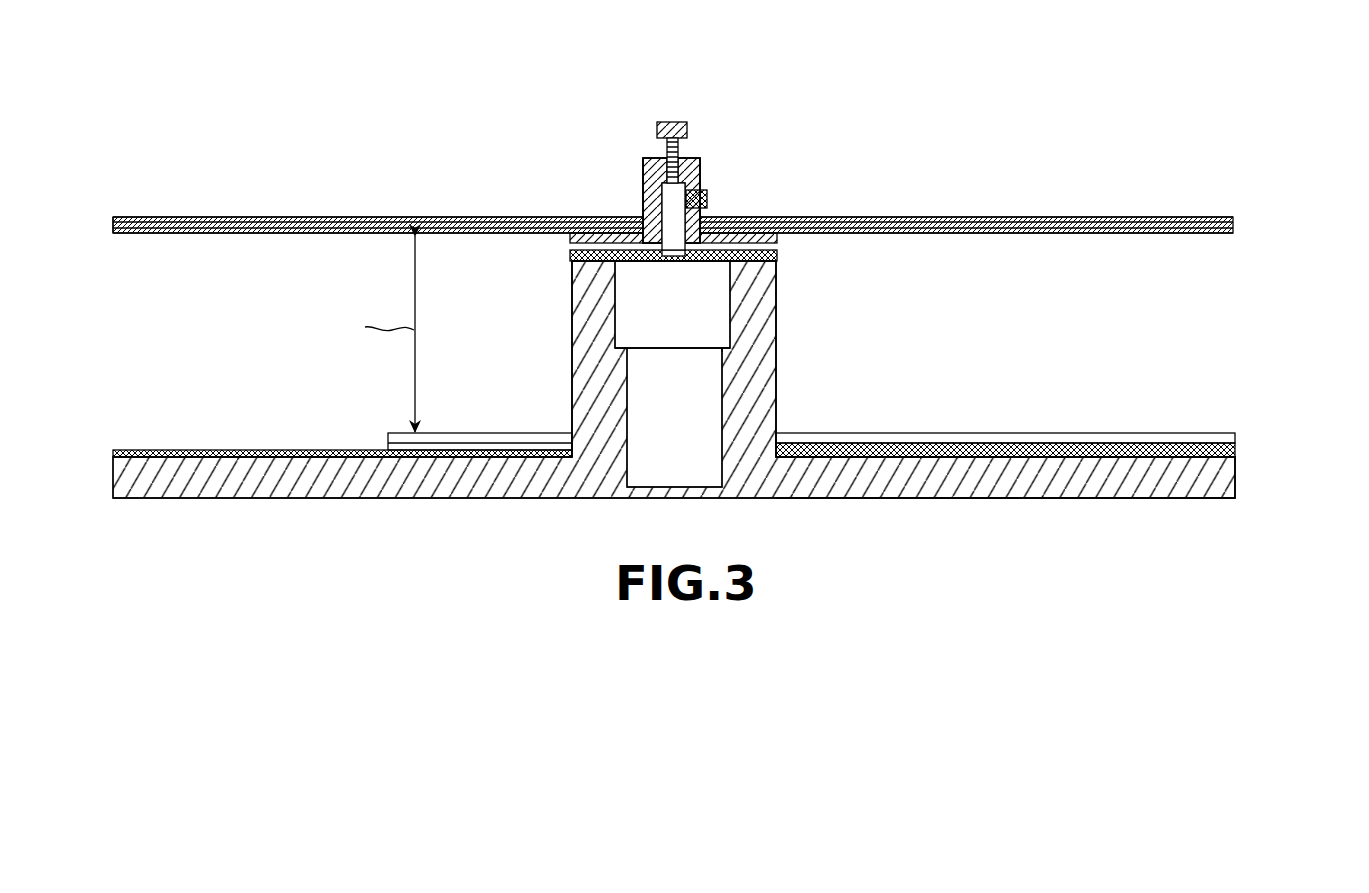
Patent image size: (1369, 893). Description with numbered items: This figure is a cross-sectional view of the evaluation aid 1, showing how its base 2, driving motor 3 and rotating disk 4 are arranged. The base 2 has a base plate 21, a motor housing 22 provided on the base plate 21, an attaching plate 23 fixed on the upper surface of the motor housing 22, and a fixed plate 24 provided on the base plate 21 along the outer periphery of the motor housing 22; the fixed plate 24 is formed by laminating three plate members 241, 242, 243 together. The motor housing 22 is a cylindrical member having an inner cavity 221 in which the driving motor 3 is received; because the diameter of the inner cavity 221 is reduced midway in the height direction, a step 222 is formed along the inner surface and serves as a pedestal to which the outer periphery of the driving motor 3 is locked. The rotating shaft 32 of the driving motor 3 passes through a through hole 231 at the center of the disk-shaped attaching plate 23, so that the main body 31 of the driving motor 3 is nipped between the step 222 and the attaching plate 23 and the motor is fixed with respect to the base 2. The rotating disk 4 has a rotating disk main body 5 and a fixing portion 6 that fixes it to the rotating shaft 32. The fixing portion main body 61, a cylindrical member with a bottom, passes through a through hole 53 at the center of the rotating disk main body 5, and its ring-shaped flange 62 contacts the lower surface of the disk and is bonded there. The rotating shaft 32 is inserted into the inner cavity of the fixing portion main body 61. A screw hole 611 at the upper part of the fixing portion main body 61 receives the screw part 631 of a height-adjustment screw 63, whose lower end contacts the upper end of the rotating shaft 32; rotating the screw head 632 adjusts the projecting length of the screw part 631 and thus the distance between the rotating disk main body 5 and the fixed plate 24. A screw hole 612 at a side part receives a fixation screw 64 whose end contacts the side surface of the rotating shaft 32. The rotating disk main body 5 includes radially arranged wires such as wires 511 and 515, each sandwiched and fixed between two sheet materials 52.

The evaluation aid 1 is at (1102, 87).
The base 2 is at (1214, 410).
The driving motor 3 is at (712, 303).
The rotating disk 4 is at (1180, 200).
The rotating disk main body 5 is at (1113, 198).
The fixing portion 6 is at (598, 111).
The base plate 21 is at (1200, 480).
The motor housing 22 is at (760, 390).
The attaching plate 23 is at (574, 256).
The fixed plate 24 is at (1318, 407).
The main body 31 is at (712, 279).
The rotating shaft 32 is at (698, 192).
The sheet materials 52 is at (240, 217).
The through hole 53 is at (638, 212).
The fixing portion main body 61 is at (643, 168).
The flange 62 is at (778, 238).
The screw 63 is at (660, 92).
The screw 64 is at (708, 200).
The inner cavity 221 is at (690, 402).
The step 222 is at (730, 352).
The through hole 231 is at (690, 254).
The plate member 241 is at (1236, 460).
The plate member 242 is at (1236, 450).
The plate member 243 is at (1236, 437).
The wire 511 is at (1236, 225).
The wire 515 is at (113, 224).
The screw hole 611 is at (652, 166).
The screw hole 612 is at (706, 190).
The screw part 631 is at (696, 162).
The screw head 632 is at (673, 128).